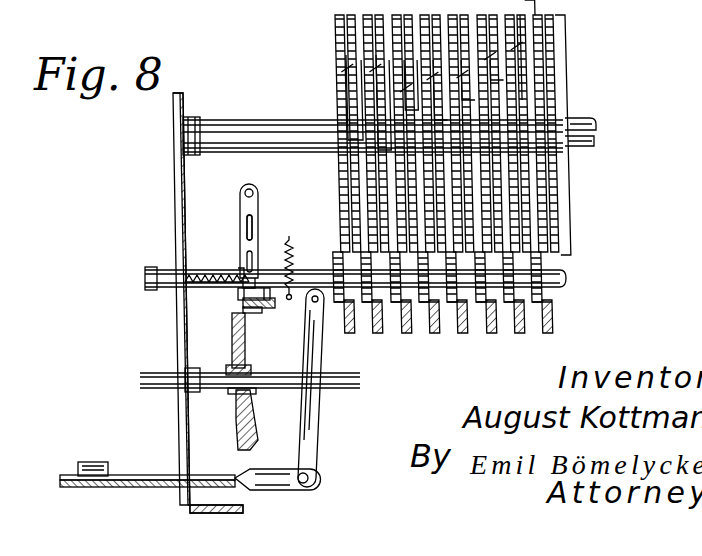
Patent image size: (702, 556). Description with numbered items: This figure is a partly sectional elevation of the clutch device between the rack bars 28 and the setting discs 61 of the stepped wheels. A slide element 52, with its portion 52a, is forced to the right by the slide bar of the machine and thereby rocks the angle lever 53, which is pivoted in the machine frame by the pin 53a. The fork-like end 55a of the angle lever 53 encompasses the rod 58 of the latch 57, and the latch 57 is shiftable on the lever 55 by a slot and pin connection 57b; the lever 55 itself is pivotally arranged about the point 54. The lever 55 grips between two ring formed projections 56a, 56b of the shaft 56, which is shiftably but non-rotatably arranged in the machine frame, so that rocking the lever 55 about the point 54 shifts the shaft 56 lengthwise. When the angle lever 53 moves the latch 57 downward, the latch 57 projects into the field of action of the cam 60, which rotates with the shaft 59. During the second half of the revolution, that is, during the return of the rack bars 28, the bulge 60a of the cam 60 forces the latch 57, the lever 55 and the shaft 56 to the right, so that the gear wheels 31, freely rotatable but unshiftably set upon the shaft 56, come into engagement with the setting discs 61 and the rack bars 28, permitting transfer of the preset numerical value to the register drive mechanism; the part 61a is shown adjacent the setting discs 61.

The setting discs 61 is at (562, 44).
The rack bracket 61a is at (546, 110).
The gear wheels 31 is at (540, 262).
The rack bars 28 is at (458, 325).
The lever 55 is at (243, 200).
The point 54 is at (254, 191).
The slot and pin connection 57b is at (275, 223).
The latch 57 is at (258, 254).
The ring formed projection 56a is at (243, 268).
The shaft 56 is at (205, 268).
The rod 58 is at (240, 297).
The fork-like end 55a is at (253, 310).
The pin 53a is at (317, 291).
The angle lever 53 is at (318, 448).
The ring formed projection 56b is at (320, 305).
The cam 60 is at (240, 346).
The shaft 59 is at (335, 386).
The bulge 60a is at (252, 428).
The arm 52a is at (267, 478).
The slide element 52 is at (165, 448).